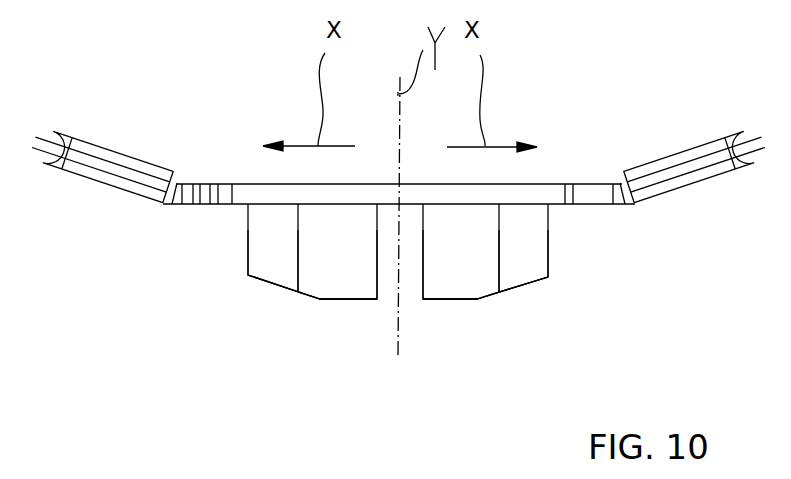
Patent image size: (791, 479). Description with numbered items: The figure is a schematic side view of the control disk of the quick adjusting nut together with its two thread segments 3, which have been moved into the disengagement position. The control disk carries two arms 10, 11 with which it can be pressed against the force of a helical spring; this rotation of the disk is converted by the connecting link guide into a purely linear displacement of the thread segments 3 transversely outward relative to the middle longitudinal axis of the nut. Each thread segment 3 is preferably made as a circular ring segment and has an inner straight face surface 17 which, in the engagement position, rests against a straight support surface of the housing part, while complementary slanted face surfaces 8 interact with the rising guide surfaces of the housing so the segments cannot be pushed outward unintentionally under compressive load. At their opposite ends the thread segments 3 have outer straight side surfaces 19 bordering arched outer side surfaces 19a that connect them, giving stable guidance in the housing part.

The thread segment 3 is at (200, 283).
The slanted face surface 8 is at (283, 288).
The arm 10 is at (174, 184).
The arm 11 is at (625, 184).
The inner straight face surface 17 is at (437, 303).
The outer straight side surface 19 is at (328, 272).
The arched outer side surface 19a is at (270, 242).